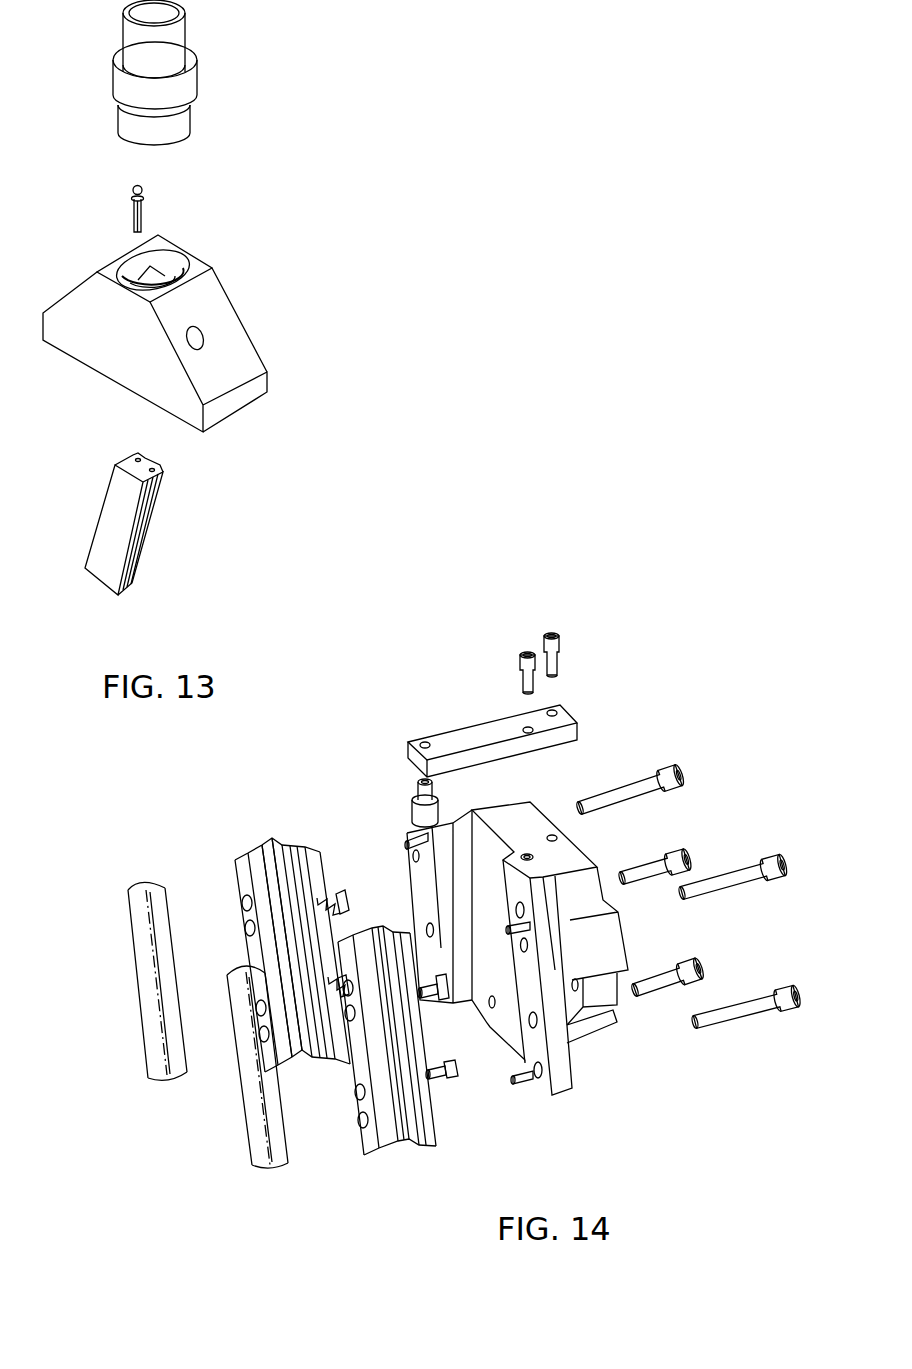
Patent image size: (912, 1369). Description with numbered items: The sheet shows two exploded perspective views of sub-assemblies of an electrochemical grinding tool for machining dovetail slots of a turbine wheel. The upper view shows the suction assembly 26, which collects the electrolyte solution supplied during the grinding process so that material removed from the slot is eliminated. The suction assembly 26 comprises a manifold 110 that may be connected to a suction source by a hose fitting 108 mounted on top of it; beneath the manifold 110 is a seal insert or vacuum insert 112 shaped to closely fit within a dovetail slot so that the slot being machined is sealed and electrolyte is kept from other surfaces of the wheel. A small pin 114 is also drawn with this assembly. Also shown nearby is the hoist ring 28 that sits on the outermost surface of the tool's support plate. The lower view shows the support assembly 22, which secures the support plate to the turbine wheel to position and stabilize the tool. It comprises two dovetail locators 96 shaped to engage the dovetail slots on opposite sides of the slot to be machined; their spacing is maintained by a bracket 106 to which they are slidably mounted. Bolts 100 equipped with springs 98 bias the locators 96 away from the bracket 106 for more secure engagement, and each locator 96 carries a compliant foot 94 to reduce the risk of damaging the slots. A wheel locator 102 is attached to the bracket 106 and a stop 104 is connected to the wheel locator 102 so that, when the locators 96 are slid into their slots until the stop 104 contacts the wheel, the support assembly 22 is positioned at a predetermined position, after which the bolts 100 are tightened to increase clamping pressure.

In FIG. 14, the support assembly 22 is at (695, 658).
In FIG. 14, the suction assembly 26 is at (680, 862).
In FIG. 13, the hoist ring 28 is at (393, 225).
In FIG. 14, the compliant foot 94 is at (138, 882).
In FIG. 14, the dovetail locators 96 is at (268, 845).
In FIG. 14, the springs 98 is at (325, 878).
In FIG. 14, the bolts 100 is at (340, 890).
In FIG. 14, the wheel locator 102 is at (487, 730).
In FIG. 14, the stop 104 is at (418, 808).
In FIG. 14, the bracket 106 is at (528, 818).
In FIG. 13, the hose fitting 108 is at (192, 83).
In FIG. 13, the manifold 110 is at (228, 332).
In FIG. 13, the seal insert 112 is at (115, 528).
In FIG. 13, the pin 114 is at (142, 197).